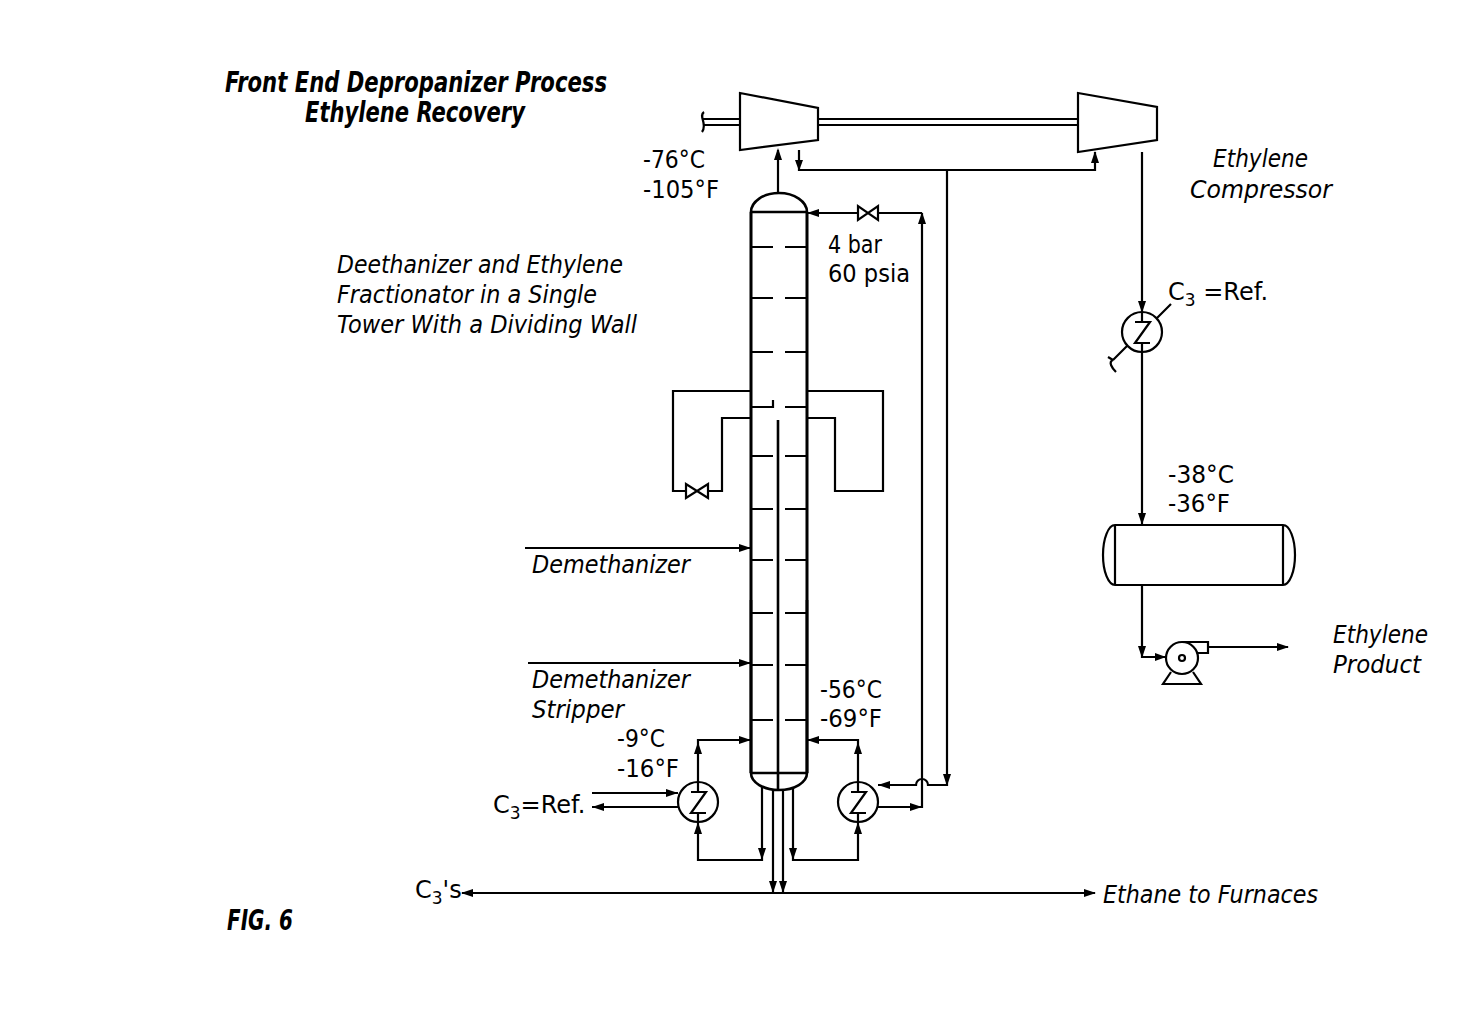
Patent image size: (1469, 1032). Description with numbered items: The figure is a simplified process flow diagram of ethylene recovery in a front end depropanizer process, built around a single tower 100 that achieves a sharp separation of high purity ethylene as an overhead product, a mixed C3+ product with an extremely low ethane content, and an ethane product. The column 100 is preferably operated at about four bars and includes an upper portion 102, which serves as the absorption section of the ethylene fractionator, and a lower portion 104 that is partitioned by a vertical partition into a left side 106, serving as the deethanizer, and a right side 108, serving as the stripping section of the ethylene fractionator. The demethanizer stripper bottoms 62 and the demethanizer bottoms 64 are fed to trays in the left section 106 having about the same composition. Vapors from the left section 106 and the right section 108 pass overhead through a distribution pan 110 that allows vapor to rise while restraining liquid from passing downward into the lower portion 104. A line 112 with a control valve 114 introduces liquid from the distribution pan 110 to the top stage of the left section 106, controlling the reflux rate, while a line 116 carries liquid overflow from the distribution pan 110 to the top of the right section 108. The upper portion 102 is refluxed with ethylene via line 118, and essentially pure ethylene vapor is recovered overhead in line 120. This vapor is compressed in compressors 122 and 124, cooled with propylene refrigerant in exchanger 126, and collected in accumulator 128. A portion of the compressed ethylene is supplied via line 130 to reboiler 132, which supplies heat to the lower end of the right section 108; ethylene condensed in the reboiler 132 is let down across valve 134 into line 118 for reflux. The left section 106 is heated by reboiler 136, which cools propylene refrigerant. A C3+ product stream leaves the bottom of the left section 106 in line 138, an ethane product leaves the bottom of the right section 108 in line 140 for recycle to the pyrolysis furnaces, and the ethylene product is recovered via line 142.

The demethanizer stripper bottoms 62 is at (577, 662).
The demethanizer bottoms 64 is at (575, 547).
The single tower 100 is at (808, 582).
The upper portion 102 is at (750, 304).
The lower portion 104 is at (808, 633).
The left side 106 is at (750, 503).
The right side 108 is at (808, 530).
The distribution pan 110 is at (786, 403).
The line 112 is at (673, 421).
The control valve 114 is at (687, 490).
The line 116 is at (883, 458).
The line 118 is at (828, 208).
The line 120 is at (777, 172).
The compressor 122 is at (778, 98).
The compressor 124 is at (1118, 100).
The exchanger 126 is at (1157, 345).
The accumulator 128 is at (1297, 548).
The line 130 is at (947, 700).
The reboiler 132 is at (872, 818).
The valve 134 is at (876, 207).
The reboiler 136 is at (684, 818).
The line 138 is at (645, 895).
The line 140 is at (910, 893).
The line 142 is at (1245, 647).